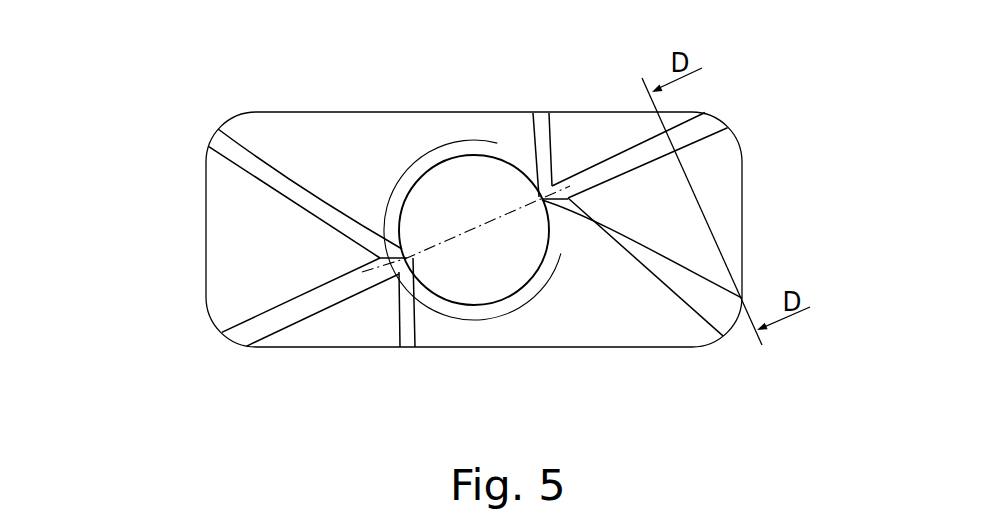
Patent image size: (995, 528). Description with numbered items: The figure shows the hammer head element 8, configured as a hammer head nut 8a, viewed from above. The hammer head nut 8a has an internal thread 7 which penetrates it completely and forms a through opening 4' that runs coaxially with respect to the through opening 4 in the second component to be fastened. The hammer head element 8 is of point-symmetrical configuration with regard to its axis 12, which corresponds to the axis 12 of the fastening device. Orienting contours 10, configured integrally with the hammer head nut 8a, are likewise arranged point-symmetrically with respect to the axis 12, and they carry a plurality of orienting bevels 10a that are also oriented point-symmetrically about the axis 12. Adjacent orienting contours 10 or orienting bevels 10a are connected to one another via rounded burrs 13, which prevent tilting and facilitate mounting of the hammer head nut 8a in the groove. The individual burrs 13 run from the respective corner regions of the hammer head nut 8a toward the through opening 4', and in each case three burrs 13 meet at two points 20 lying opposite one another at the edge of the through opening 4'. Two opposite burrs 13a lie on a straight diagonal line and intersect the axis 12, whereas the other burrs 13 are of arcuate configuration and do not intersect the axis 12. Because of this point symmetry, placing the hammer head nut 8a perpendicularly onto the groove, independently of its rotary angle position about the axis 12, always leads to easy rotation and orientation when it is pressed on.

The hammer head element 8 is at (182, 102).
The hammer head nut 8a is at (393, 188).
The orienting contours 10 is at (331, 143).
The orienting bevels 10a is at (474, 229).
The rounded burrs 13 is at (268, 177).
The burrs 13a is at (475, 230).
The points 20 is at (540, 197).
The internal thread 7 is at (513, 295).
The axis 12 is at (470, 232).
The through opening 4' is at (474, 230).
The through opening 4 is at (474, 230).